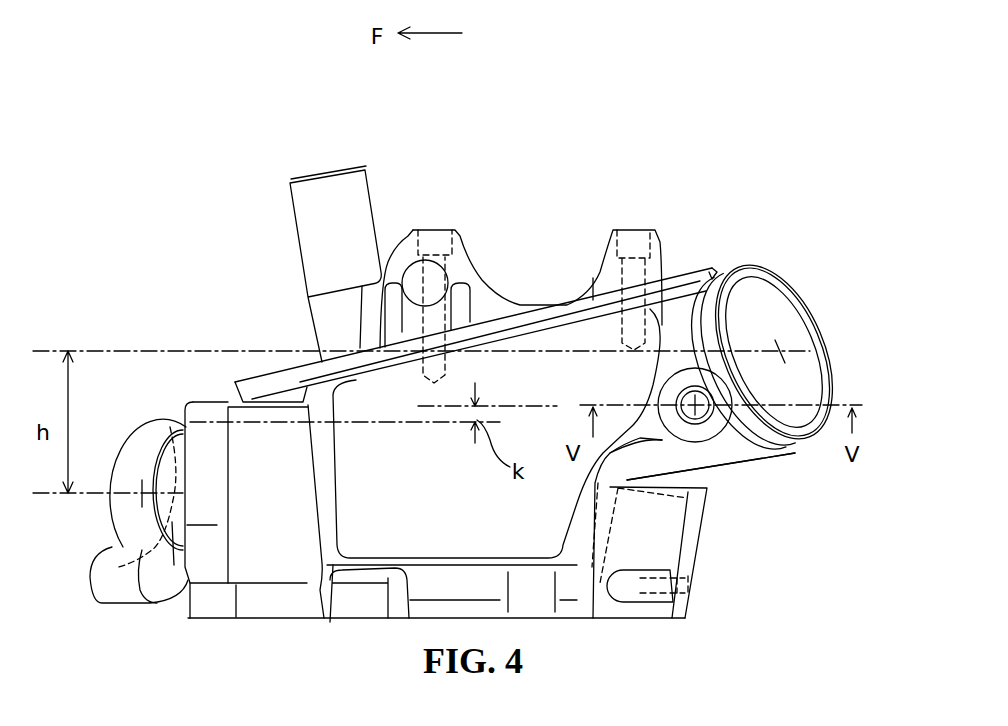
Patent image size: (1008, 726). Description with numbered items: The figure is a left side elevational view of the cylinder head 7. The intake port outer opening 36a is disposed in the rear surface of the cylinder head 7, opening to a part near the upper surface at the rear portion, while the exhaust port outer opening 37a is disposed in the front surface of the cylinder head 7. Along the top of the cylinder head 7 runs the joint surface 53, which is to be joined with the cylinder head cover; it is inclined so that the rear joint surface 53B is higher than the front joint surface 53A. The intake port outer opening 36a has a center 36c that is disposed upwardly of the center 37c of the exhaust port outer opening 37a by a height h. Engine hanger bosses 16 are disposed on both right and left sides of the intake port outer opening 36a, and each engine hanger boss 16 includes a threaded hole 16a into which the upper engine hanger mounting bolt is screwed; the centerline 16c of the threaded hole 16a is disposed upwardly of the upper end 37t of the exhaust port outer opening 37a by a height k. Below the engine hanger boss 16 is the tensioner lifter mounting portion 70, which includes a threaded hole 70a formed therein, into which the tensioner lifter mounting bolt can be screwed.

The cylinder head 7 is at (197, 206).
The joint surface 53 is at (497, 317).
The front joint surface 53A is at (273, 370).
The rear joint surface 53B is at (705, 270).
The center of the exhaust port outer opening 37c is at (121, 452).
The upper end of the exhaust port outer opening 37t is at (170, 426).
The exhaust port outer opening 37a is at (110, 510).
The intake port outer opening 36a is at (757, 298).
The center of the intake port outer opening 36c is at (750, 365).
The engine hanger boss 16 is at (662, 482).
The threaded hole 16a is at (693, 440).
The centerline of the threaded hole 16c is at (698, 405).
The tensioner lifter mounting portion 70 is at (702, 528).
The threaded hole 70a is at (680, 593).